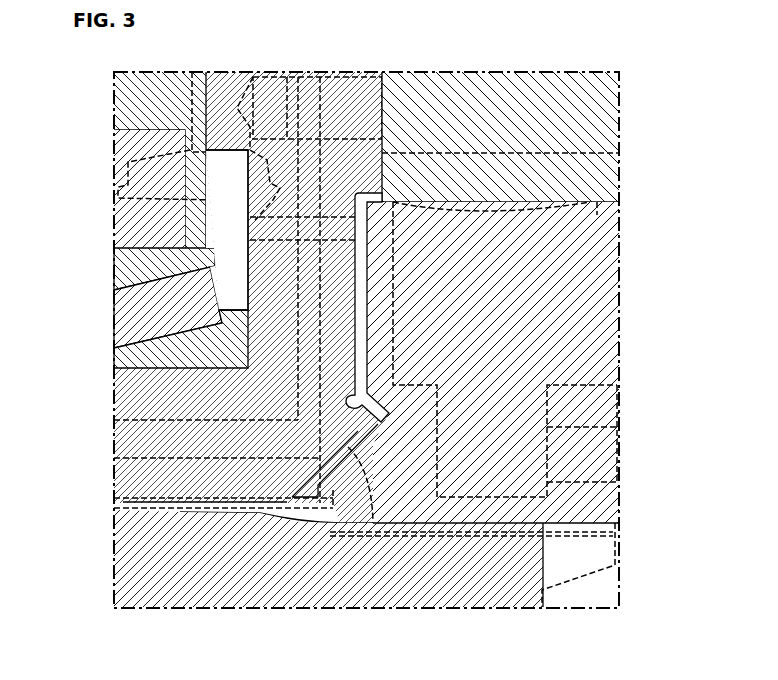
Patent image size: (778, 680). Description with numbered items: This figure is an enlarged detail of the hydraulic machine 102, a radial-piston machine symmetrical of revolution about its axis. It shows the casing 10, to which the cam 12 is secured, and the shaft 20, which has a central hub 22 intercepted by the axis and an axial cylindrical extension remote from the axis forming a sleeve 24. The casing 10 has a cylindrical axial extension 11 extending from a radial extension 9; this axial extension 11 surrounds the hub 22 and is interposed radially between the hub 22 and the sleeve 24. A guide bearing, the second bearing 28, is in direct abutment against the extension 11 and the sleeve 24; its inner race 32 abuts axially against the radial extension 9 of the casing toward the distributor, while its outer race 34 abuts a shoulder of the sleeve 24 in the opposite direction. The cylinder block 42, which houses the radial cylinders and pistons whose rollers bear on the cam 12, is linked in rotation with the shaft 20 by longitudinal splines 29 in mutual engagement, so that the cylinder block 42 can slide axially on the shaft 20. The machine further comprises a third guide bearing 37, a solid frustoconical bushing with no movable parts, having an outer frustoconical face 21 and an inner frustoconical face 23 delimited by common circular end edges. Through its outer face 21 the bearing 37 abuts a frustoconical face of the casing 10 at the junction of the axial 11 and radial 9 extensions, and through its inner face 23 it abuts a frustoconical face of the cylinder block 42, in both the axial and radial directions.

The hydraulic machine 102 is at (348, 341).
The casing 10 is at (334, 112).
The cam 12 is at (502, 145).
The sleeve 24 is at (157, 194).
The radial extension 9 is at (282, 287).
The outer race 34 is at (157, 275).
The second bearing 28 is at (175, 314).
The inner race 32 is at (204, 359).
The cylinder block 42 is at (501, 352).
The inner frustoconical face 23 is at (367, 445).
The third guide bearing 37 is at (370, 450).
The outer frustoconical face 21 is at (329, 453).
The axial extension 11 is at (204, 442).
The hub 22 is at (169, 570).
The shaft 20 is at (337, 559).
The longitudinal splines 29 is at (493, 519).